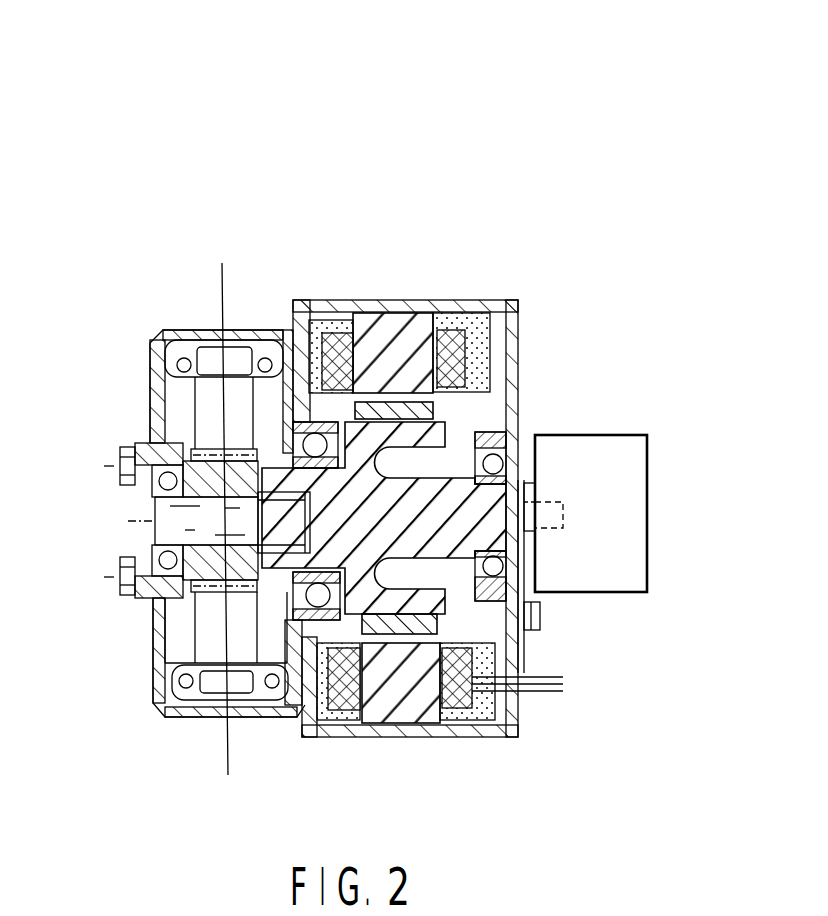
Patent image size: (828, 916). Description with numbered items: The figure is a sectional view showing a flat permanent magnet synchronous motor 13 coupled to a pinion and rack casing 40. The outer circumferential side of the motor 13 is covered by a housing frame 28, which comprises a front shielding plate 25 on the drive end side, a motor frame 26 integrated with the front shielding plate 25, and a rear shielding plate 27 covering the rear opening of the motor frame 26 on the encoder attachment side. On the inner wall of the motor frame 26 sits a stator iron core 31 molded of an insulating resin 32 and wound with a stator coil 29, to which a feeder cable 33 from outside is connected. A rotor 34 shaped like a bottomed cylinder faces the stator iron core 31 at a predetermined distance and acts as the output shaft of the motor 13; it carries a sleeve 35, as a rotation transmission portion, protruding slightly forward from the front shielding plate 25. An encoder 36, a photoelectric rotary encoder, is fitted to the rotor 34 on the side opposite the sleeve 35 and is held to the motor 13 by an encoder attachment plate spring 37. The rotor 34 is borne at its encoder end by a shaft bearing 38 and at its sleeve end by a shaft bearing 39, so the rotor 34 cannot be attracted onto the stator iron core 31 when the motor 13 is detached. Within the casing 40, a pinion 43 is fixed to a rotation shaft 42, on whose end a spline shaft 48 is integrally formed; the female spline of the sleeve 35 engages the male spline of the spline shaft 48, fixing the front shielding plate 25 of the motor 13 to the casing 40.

The motor 13 is at (402, 112).
The front shielding plate 25 is at (291, 310).
The motor frame 26 is at (410, 303).
The rear shielding plate 27 is at (514, 300).
The housing frame 28 is at (520, 208).
The stator coil 29 is at (467, 360).
The stator iron core 31 is at (425, 390).
The insulating resin 32 is at (480, 333).
The feeder cable 33 is at (548, 695).
The rotor 34 is at (507, 650).
The sleeve 35 is at (282, 470).
The encoder 36 is at (635, 477).
The encoder attachment plate spring 37 is at (530, 580).
The shaft bearing 38 is at (522, 557).
The shaft bearing 39 is at (297, 620).
The pinion and rack casing 40 is at (180, 326).
The rotation shaft 42 is at (217, 535).
The pinion 43 is at (247, 572).
The spline shaft 48 is at (256, 458).